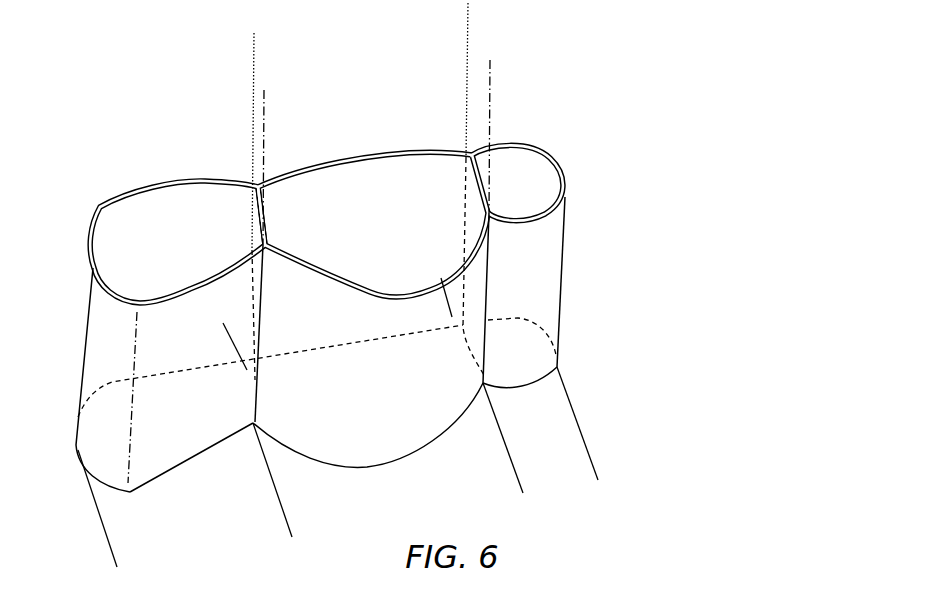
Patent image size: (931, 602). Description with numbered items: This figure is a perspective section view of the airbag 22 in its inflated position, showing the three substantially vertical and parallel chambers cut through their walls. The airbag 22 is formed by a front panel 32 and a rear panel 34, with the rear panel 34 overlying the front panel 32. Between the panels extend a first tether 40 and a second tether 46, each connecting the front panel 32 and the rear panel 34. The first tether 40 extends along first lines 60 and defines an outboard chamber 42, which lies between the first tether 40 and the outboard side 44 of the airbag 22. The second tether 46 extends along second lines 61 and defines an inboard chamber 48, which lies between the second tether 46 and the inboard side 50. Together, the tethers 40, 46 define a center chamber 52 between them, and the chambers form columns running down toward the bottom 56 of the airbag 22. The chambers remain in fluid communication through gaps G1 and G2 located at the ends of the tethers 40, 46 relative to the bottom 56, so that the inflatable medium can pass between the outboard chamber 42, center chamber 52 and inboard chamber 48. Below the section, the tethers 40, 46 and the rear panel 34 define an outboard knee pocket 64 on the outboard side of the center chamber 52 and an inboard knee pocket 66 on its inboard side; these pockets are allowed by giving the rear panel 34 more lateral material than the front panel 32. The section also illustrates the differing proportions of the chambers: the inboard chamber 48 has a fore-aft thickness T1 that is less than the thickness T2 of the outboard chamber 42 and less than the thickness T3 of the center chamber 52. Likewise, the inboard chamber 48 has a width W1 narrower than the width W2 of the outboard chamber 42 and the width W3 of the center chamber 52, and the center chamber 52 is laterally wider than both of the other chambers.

The airbag 22 is at (126, 188).
The front panel 32 is at (318, 195).
The inboard chamber 48 is at (520, 143).
The outboard chamber 42 is at (100, 207).
The outboard side 44 is at (88, 277).
The first tether 40 is at (258, 222).
The second tether 46 is at (472, 212).
The center chamber 52 is at (315, 168).
The rear panel 34 is at (328, 303).
The bottom 56 is at (200, 460).
The inboard side 50 is at (560, 297).
The outboard knee pocket 64 is at (253, 403).
The inboard knee pocket 66 is at (490, 278).
The first lines 60 is at (264, 107).
The second lines 61 is at (490, 98).
The thickness of inboard chamber T1 is at (508, 153).
The thickness of outboard chamber T2 is at (170, 192).
The thickness of center chamber T3 is at (398, 292).
The gap G1 is at (233, 293).
The gap G2 is at (447, 250).
The width of inboard chamber W1 is at (592, 463).
The width of outboard chamber W2 is at (280, 513).
The width of center chamber W3 is at (283, 513).